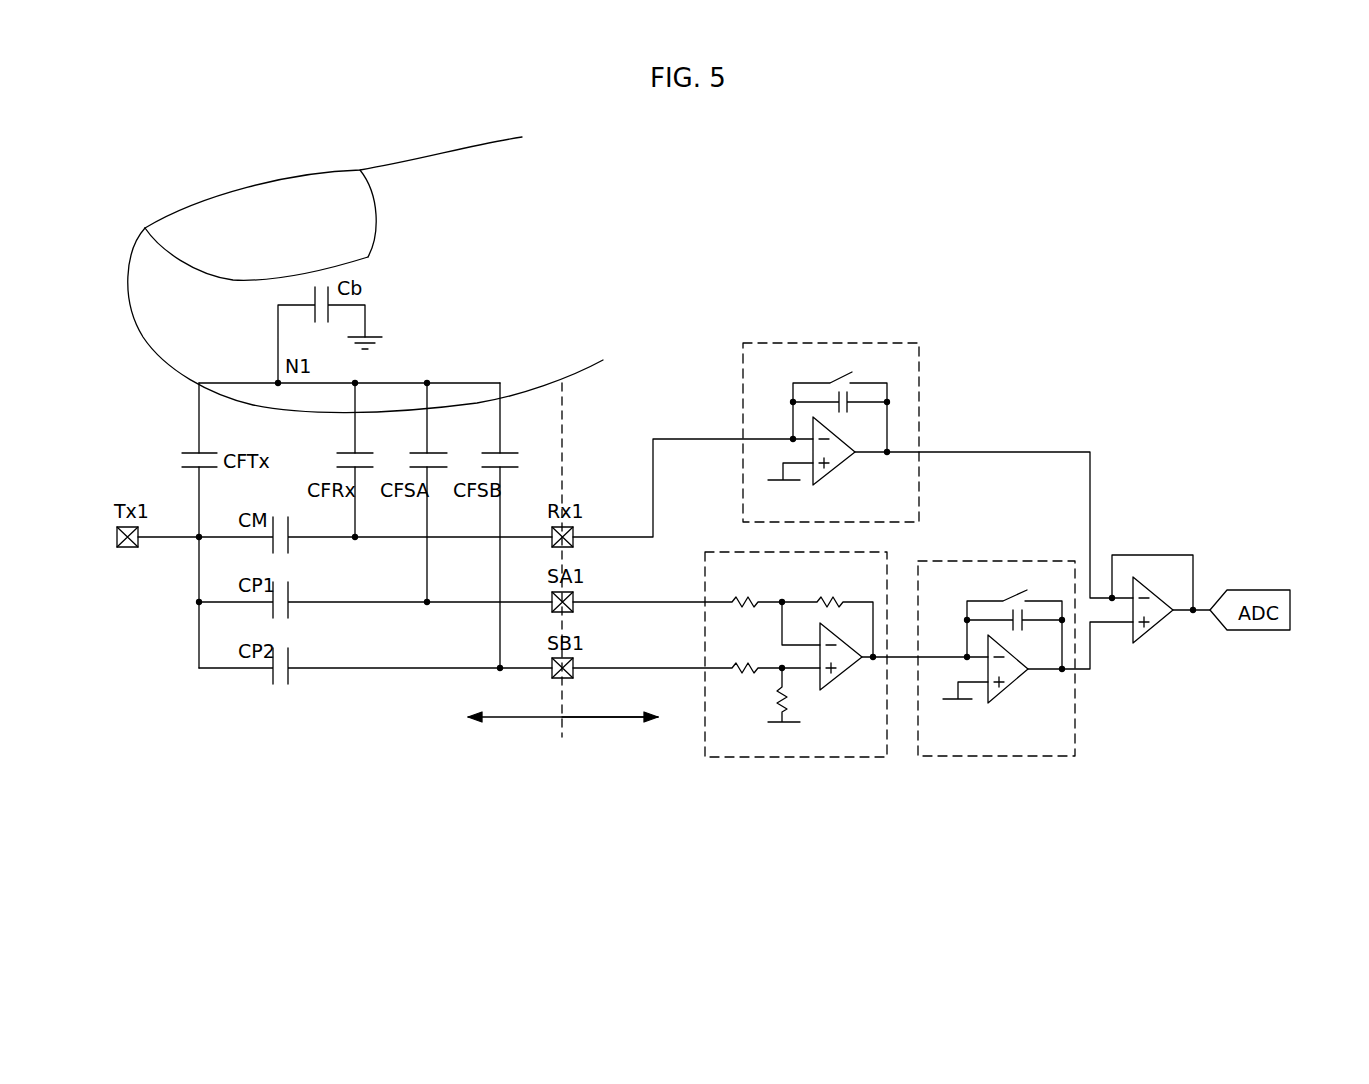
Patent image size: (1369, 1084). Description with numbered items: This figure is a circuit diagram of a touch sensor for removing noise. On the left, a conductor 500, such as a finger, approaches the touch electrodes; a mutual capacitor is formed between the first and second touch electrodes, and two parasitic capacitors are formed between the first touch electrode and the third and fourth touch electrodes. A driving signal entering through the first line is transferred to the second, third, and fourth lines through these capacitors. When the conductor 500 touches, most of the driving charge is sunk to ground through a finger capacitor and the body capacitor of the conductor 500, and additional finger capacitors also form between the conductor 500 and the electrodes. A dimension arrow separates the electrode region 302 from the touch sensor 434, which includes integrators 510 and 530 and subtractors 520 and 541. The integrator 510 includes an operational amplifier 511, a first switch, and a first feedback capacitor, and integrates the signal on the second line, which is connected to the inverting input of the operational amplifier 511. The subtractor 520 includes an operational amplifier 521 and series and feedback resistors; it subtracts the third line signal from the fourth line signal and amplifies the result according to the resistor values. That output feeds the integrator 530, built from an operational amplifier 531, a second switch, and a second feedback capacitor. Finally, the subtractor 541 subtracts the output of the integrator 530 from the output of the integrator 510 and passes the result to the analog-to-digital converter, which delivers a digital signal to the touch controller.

The conductor 500 is at (190, 204).
The touch sensor electrode region 302 is at (563, 705).
The touch sensor 434 is at (610, 703).
The integrator 510 is at (746, 421).
The operational amplifier 511 is at (840, 470).
The subtractor 520 is at (730, 679).
The operational amplifier 521 is at (843, 672).
The integrator 530 is at (996, 684).
The operational amplifier 531 is at (991, 684).
The subtractor 541 is at (1153, 628).